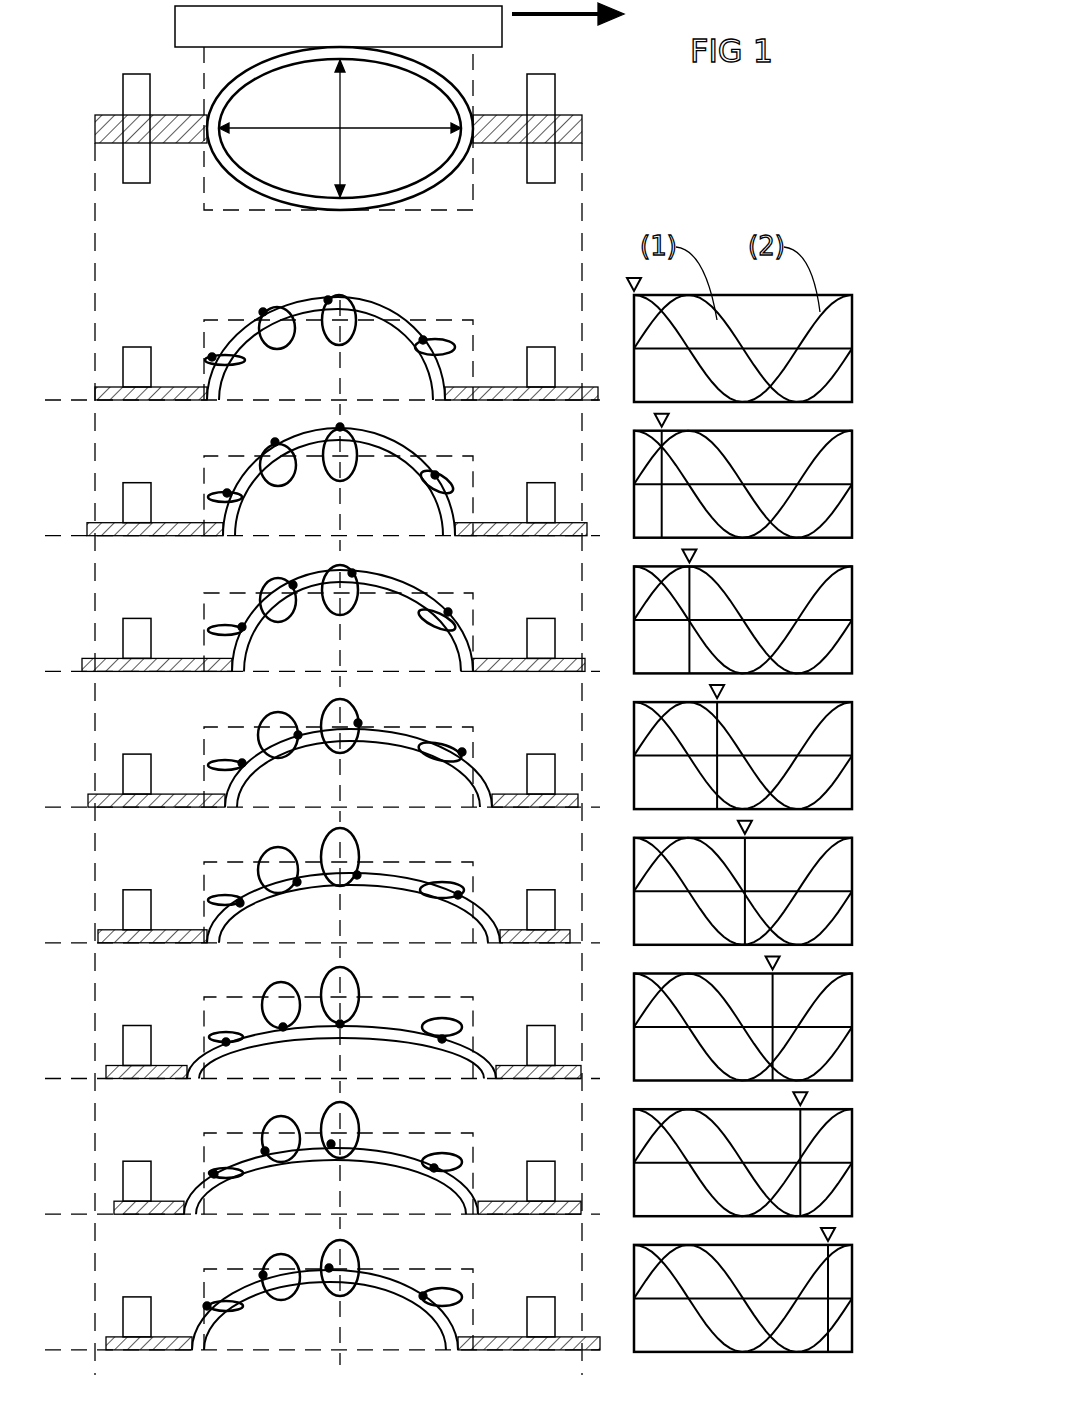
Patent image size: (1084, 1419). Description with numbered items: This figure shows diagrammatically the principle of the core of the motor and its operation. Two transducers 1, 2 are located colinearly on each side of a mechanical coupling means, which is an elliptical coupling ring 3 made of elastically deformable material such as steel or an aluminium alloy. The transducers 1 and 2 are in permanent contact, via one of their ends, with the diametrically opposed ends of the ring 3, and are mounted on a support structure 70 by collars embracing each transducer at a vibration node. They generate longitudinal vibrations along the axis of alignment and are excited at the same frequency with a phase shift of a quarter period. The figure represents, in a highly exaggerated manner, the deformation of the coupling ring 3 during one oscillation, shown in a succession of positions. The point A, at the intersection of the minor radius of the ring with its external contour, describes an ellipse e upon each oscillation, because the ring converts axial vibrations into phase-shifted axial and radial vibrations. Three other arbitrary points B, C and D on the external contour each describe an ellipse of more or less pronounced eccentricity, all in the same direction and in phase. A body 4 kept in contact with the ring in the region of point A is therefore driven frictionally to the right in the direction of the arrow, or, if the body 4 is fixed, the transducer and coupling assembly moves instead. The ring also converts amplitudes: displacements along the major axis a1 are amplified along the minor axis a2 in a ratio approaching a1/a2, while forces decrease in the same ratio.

The transducer 1 is at (185, 112).
The transducer 2 is at (492, 145).
The coupling ring 3 is at (245, 183).
The body 4 is at (490, 32).
The support structure 70 is at (135, 110).
The point A is at (330, 62).
The point B is at (263, 310).
The point C is at (217, 352).
The point D is at (425, 340).
The ellipse e is at (365, 332).
The major axis a1 is at (435, 126).
The minor axis a2 is at (336, 180).